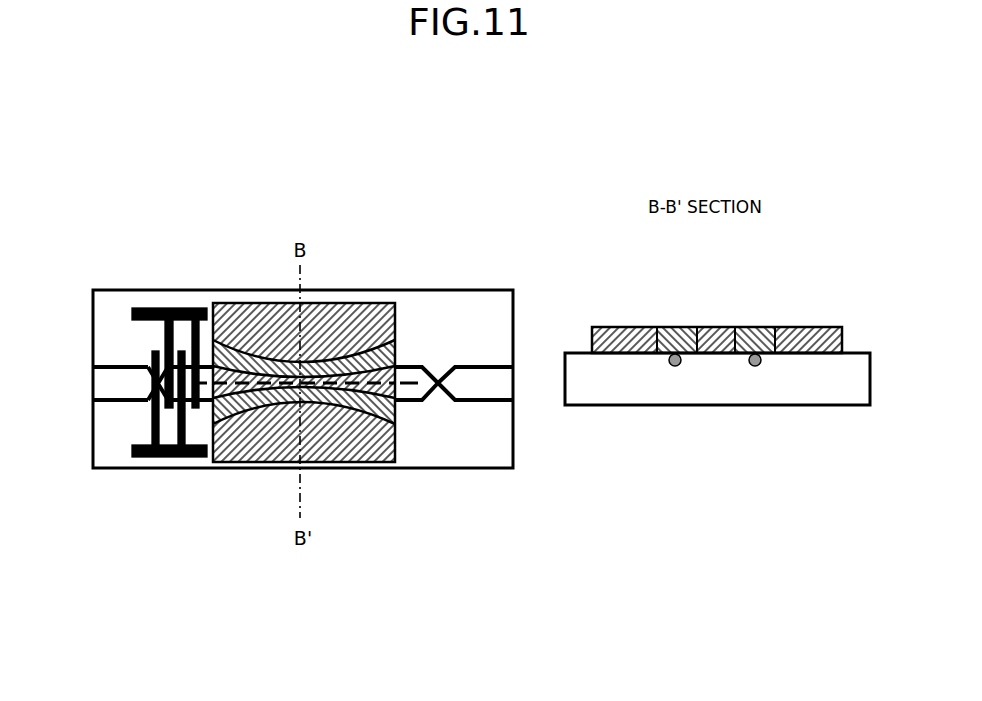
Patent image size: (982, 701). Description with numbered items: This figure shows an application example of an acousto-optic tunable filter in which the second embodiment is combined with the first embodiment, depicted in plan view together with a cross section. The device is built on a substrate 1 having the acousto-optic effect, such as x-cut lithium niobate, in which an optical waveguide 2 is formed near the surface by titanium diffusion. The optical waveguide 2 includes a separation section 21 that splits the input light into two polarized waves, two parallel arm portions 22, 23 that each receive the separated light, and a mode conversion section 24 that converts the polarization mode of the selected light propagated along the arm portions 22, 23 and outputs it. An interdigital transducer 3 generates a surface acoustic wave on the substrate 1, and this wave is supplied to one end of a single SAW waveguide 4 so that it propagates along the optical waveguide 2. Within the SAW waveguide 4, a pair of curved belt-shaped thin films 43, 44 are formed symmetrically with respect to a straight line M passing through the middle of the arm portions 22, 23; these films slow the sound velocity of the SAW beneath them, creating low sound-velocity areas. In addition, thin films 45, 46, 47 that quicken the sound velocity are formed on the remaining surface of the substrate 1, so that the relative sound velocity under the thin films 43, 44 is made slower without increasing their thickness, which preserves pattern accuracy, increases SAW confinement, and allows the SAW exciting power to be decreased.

The substrate 1 is at (497, 470).
The optical waveguide 2 is at (118, 339).
The interdigital transducer 3 is at (155, 458).
The SAW waveguide 4 is at (521, 363).
The separation section 21 is at (158, 375).
The arm portion 22 is at (405, 365).
The arm portion 23 is at (405, 402).
The mode conversion section 24 is at (440, 383).
The thin film 43 is at (233, 346).
The thin film 44 is at (233, 418).
The thin film 45 is at (320, 304).
The thin film 46 is at (376, 345).
The thin film 47 is at (328, 462).
The straight line M is at (412, 384).